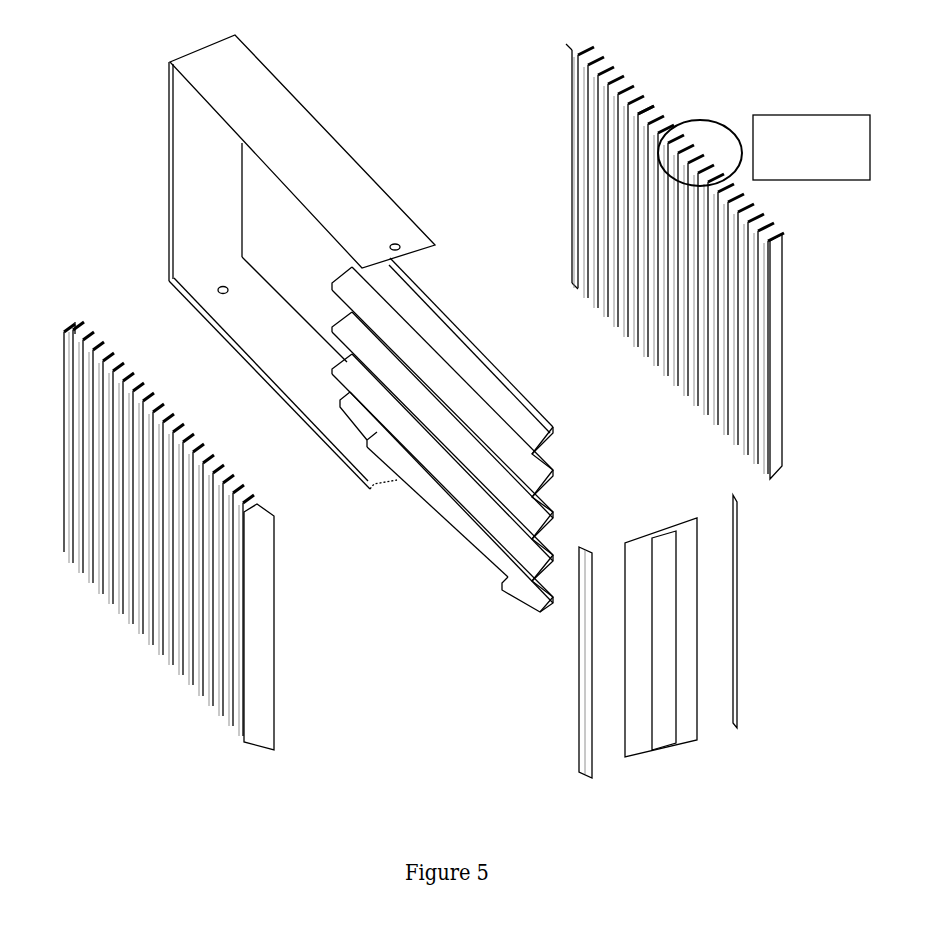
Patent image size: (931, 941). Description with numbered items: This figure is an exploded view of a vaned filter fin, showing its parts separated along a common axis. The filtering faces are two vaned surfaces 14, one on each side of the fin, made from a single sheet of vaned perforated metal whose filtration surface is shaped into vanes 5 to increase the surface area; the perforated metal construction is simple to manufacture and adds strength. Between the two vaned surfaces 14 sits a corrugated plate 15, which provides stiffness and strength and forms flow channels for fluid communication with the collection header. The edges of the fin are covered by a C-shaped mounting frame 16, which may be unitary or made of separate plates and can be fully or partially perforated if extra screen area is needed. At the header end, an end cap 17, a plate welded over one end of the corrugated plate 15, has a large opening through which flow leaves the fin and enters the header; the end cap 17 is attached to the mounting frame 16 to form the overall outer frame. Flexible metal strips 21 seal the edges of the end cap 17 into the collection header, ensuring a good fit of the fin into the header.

The vanes 5 is at (647, 110).
The vaned surfaces 14 is at (572, 140).
The corrugated plate 15 is at (440, 510).
The mounting frame 16 is at (265, 100).
The end cap 17 is at (688, 534).
The flexible metal strips 21 is at (585, 745).